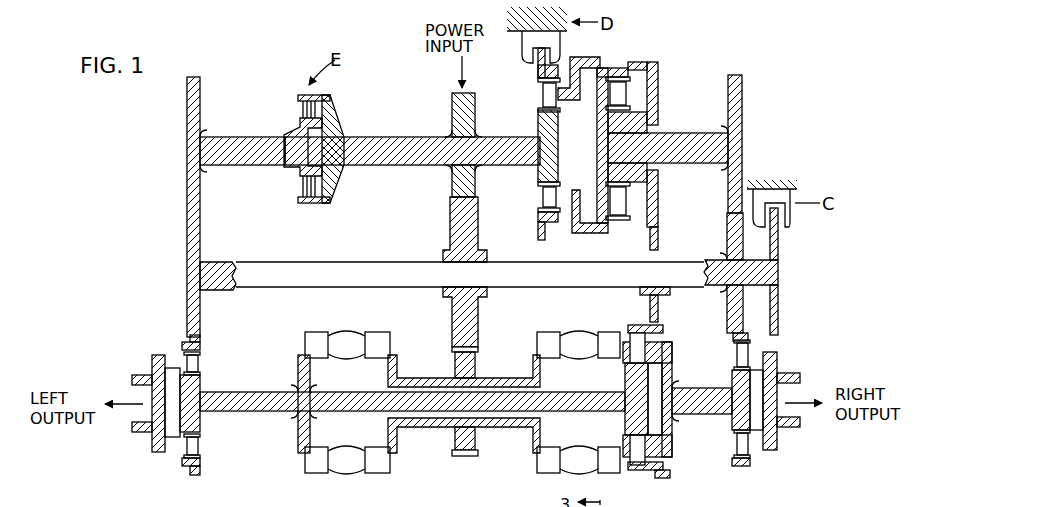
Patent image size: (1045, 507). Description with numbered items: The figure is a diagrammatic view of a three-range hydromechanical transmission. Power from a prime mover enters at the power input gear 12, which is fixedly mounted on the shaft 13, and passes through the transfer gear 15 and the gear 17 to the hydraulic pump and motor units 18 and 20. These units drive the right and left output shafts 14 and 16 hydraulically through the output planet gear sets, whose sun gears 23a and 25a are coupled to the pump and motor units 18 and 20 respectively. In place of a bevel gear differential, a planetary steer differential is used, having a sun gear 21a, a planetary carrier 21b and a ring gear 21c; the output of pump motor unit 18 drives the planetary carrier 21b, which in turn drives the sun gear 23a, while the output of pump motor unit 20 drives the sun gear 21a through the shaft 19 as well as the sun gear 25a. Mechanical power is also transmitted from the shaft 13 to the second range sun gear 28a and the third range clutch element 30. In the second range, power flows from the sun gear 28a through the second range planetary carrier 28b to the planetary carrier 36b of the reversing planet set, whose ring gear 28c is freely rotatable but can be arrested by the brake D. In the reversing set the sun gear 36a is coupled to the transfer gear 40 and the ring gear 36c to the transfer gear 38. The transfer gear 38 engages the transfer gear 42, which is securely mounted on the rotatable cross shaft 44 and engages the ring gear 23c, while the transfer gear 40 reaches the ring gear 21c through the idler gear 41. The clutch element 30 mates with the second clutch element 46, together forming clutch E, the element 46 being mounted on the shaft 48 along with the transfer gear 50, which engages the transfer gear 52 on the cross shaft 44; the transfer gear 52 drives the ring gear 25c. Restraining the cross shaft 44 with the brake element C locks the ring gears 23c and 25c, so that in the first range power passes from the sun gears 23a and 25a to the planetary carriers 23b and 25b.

The power input gear 12 is at (452, 97).
The shaft 13 is at (396, 150).
The right output shaft 14 is at (800, 383).
The transfer gear 15 is at (457, 218).
The left output shaft 16 is at (127, 390).
The gear 17 is at (456, 357).
The hydraulic pump and motor unit 18 is at (537, 336).
The shaft 19 is at (362, 401).
The hydraulic pump and motor unit 20 is at (393, 336).
The sun gear 21a is at (638, 390).
The planetary carrier 21b is at (660, 452).
The ring gear 21c is at (663, 330).
The sun gear 23a is at (738, 393).
The planetary carrier 23b is at (738, 458).
The ring gear 23c is at (748, 342).
The sun gear 25a is at (190, 398).
The planetary carrier 25b is at (200, 447).
The ring gear 25c is at (198, 464).
The second range sun gear 28a is at (548, 148).
The second range planetary carrier 28b is at (540, 95).
The ring gear 28c is at (572, 78).
The third range clutch element 30 is at (330, 110).
The sun gear 36a is at (628, 125).
The planetary carrier 36b is at (632, 90).
The ring gear 36c is at (597, 120).
The transfer gear 38 is at (742, 92).
The transfer gear 40 is at (658, 203).
The idler gear 41 is at (668, 292).
The transfer gear 42 is at (727, 230).
The cross shaft 44 is at (390, 270).
The second clutch element 46 is at (300, 125).
The shaft 48 is at (240, 155).
The transfer gear 50 is at (187, 135).
The transfer gear 52 is at (195, 272).